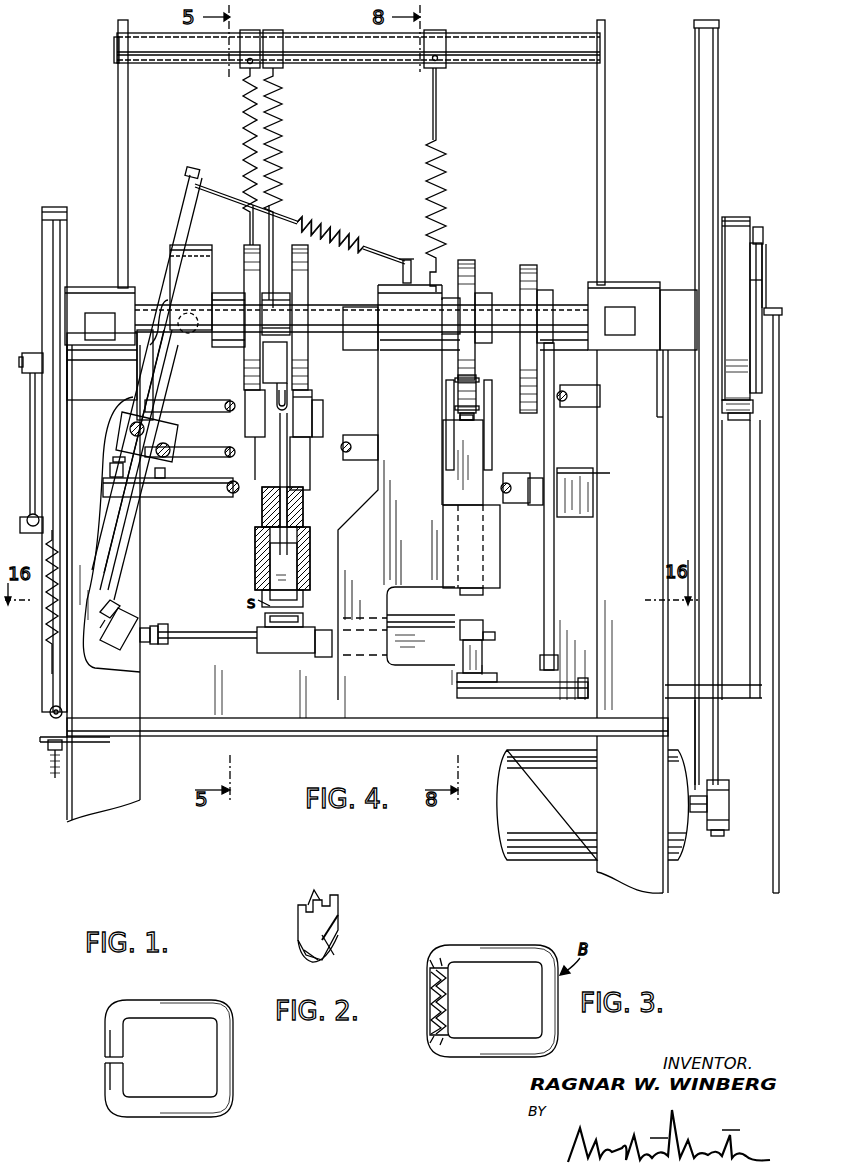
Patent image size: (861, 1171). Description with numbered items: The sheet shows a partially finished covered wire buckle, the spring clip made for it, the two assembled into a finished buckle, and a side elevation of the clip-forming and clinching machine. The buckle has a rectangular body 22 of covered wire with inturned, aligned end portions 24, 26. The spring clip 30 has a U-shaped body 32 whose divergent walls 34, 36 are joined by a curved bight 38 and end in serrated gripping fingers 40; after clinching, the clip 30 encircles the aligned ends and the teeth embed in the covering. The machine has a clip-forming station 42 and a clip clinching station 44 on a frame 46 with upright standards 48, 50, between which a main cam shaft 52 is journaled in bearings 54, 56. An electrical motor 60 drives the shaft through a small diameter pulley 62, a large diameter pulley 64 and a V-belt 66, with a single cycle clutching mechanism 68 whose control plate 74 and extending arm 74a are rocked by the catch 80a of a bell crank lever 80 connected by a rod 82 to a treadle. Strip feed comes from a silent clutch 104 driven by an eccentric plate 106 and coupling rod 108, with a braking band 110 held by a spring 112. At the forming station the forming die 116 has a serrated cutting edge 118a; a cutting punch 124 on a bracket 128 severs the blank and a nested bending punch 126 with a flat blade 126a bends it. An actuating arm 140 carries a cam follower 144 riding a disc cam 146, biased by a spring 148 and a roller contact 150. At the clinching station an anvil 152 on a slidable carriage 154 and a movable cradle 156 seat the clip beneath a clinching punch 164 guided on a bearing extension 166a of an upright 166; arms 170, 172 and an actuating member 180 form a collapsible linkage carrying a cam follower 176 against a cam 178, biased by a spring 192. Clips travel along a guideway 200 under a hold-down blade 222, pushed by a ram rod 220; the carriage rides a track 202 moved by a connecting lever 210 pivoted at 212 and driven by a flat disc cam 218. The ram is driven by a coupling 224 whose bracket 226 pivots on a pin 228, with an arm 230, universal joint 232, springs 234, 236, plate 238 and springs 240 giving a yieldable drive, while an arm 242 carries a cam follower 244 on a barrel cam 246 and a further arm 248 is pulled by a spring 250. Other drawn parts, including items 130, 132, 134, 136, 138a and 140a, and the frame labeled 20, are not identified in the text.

In FIG. 3, the frame 20 is at (500, 1057).
In FIG. 1, the rectangular body 22 is at (193, 1107).
In FIG. 1, the inturned end portion 24 is at (110, 1040).
In FIG. 1, the inturned end portion 26 is at (112, 1086).
In FIG. 2, the spring clip 30 is at (350, 912).
In FIG. 3, the spring clip 30 is at (448, 1004).
In FIG. 2, the U-shaped body 32 is at (338, 938).
In FIG. 2, the divergent wall 34 is at (298, 945).
In FIG. 2, the divergent wall 36 is at (333, 950).
In FIG. 2, the curved bight 38 is at (310, 960).
In FIG. 2, the gripping fingers 40 is at (312, 905).
In FIG. 3, the gripping fingers 40 is at (434, 996).
In FIG. 4, the clip-forming station 42 is at (271, 648).
In FIG. 4, the clip clinching station 44 is at (492, 608).
In FIG. 4, the frame 46 is at (192, 736).
In FIG. 4, the upright standard 48 is at (128, 712).
In FIG. 4, the upright standard 50 is at (664, 664).
In FIG. 4, the main cam shaft 52 is at (565, 300).
In FIG. 4, the bearing 54 is at (80, 287).
In FIG. 4, the bearing 56 is at (642, 286).
In FIG. 4, the electrical motor 60 is at (556, 858).
In FIG. 4, the small diameter pulley 62 is at (730, 810).
In FIG. 4, the large diameter pulley 64 is at (719, 105).
In FIG. 4, the V-belt 66 is at (719, 748).
In FIG. 4, the single cycle clutching mechanism 68 is at (735, 228).
In FIG. 4, the control plate 74 is at (752, 330).
In FIG. 4, the extending arm 74a is at (752, 262).
In FIG. 4, the bell crank lever 80 is at (767, 265).
In FIG. 4, the catch 80a is at (758, 227).
In FIG. 4, the rod 82 is at (775, 450).
In FIG. 4, the silent clutch 104 is at (47, 690).
In FIG. 4, the eccentric plate 106 is at (42, 292).
In FIG. 4, the coupling rod 108 is at (30, 440).
In FIG. 4, the braking band 110 is at (50, 208).
In FIG. 4, the spring 112 is at (48, 650).
In FIG. 4, the forming die 116 is at (283, 660).
In FIG. 4, the cutting edge 118a is at (291, 628).
In FIG. 4, the cutting punch 124 is at (256, 540).
In FIG. 4, the bending punch 126 is at (262, 512).
In FIG. 4, the flat blade 126a is at (272, 576).
In FIG. 4, the bracket 128 is at (258, 556).
In FIG. 4, the block 130 is at (311, 472).
In FIG. 4, the block 132 is at (312, 396).
In FIG. 4, the cam 134 is at (309, 268).
In FIG. 4, the spring 136 is at (245, 128).
In FIG. 4, the arm 138a is at (323, 426).
In FIG. 4, the actuating arm 140 is at (288, 357).
In FIG. 4, the ram rod 140a is at (271, 484).
In FIG. 4, the cam follower 144 is at (248, 418).
In FIG. 4, the disc cam 146 is at (250, 245).
In FIG. 4, the spring 148 is at (283, 137).
In FIG. 4, the roller contact 150 is at (276, 393).
In FIG. 4, the anvil 152 is at (466, 668).
In FIG. 4, the slidable carriage 154 is at (498, 690).
In FIG. 4, the movable cradle 156 is at (470, 620).
In FIG. 4, the clinching punch 164 is at (468, 478).
In FIG. 4, the upright 166 is at (362, 518).
In FIG. 4, the bearing extension 166a is at (495, 562).
In FIG. 4, the arm 170 is at (447, 392).
In FIG. 4, the arm 172 is at (491, 394).
In FIG. 4, the cam follower 176 is at (470, 378).
In FIG. 4, the cam 178 is at (468, 262).
In FIG. 4, the actuating member 180 is at (462, 420).
In FIG. 4, the spring 192 is at (446, 172).
In FIG. 4, the guideway 200 is at (412, 645).
In FIG. 4, the track 202 is at (558, 692).
In FIG. 4, the connecting lever 210 is at (554, 596).
In FIG. 4, the pivot 212 is at (532, 506).
In FIG. 4, the flat disc cam 218 is at (528, 268).
In FIG. 4, the ram rod 220 is at (222, 638).
In FIG. 4, the hold-down blade 222 is at (399, 618).
In FIG. 4, the coupling 224 is at (150, 507).
In FIG. 4, the bracket 226 is at (172, 448).
In FIG. 4, the pin 228 is at (135, 425).
In FIG. 4, the arm 230 is at (136, 568).
In FIG. 4, the universal joint 232 is at (138, 615).
In FIG. 4, the spring 234 is at (146, 644).
In FIG. 4, the spring 236 is at (103, 585).
In FIG. 4, the plate 238 is at (116, 458).
In FIG. 4, the springs 240 is at (112, 468).
In FIG. 4, the arm 242 is at (165, 370).
In FIG. 4, the cam follower 244 is at (189, 312).
In FIG. 4, the barrel cam 246 is at (172, 262).
In FIG. 4, the arm 248 is at (158, 300).
In FIG. 4, the spring 250 is at (322, 224).